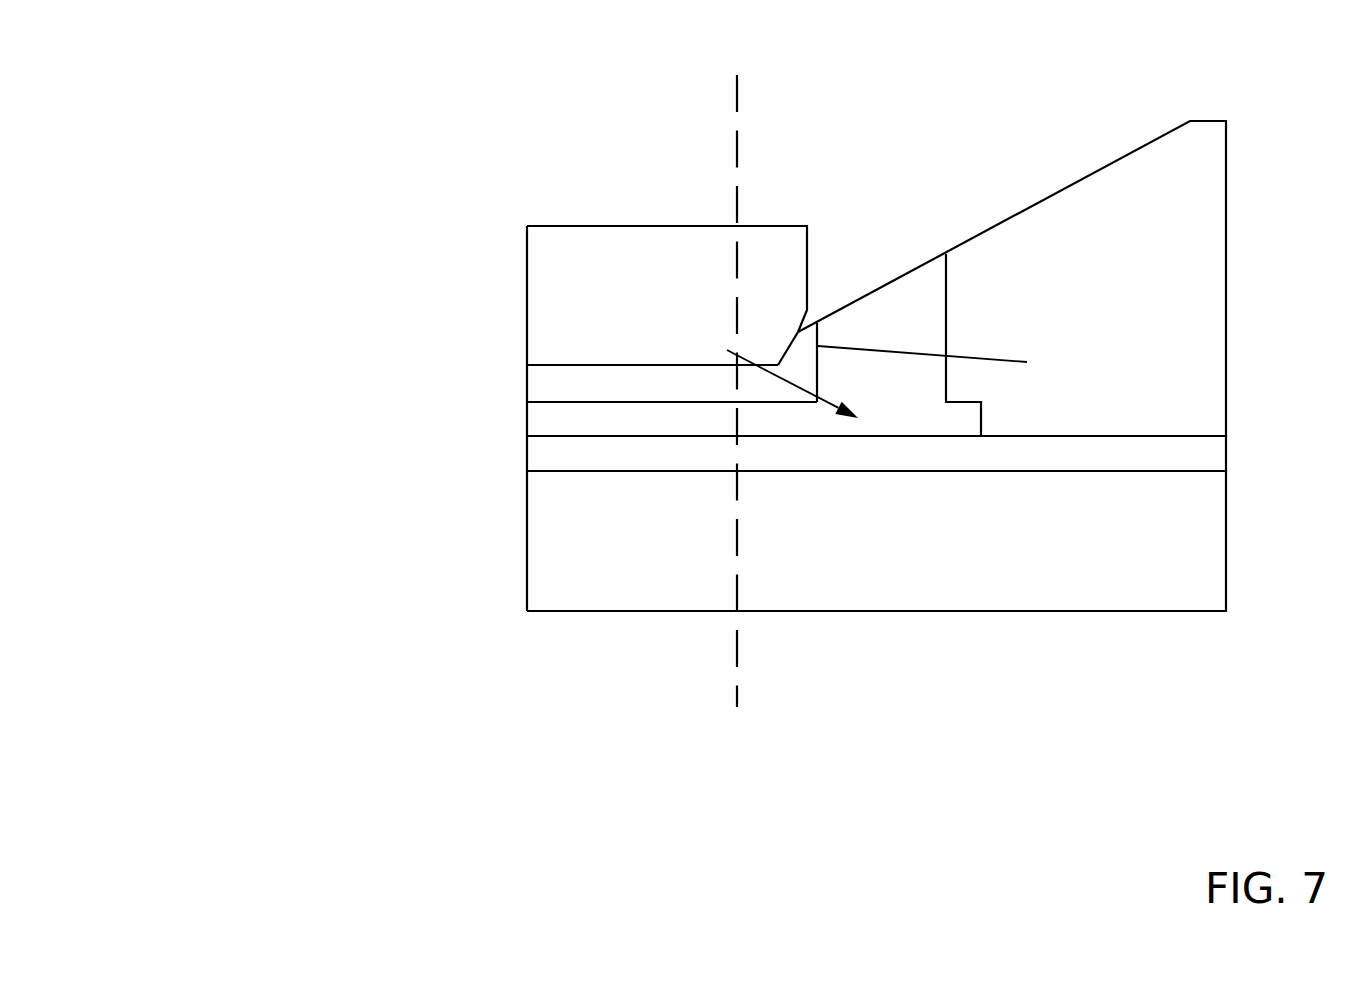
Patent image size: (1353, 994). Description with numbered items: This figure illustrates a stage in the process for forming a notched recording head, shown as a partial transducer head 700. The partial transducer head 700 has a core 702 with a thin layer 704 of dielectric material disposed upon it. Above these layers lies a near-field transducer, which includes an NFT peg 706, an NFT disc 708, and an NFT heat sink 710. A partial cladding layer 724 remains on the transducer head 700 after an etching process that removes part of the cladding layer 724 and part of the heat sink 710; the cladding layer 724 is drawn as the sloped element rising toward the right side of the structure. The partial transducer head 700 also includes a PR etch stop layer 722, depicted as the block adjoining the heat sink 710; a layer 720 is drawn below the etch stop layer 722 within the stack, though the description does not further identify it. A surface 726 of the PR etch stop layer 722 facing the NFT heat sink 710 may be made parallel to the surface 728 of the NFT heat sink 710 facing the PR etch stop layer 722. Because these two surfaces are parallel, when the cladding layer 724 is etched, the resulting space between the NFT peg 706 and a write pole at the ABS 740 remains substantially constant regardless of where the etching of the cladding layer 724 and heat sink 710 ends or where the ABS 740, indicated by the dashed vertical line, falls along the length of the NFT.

The partial transducer head 700 is at (196, 95).
The core 702 is at (527, 554).
The thin layer of dielectric material 704 is at (527, 448).
The NFT peg 706 is at (527, 415).
The NFT disc 708 is at (727, 350).
The NFT heat sink 710 is at (903, 301).
The core layer 720 is at (527, 379).
The PR etch stop layer 722 is at (527, 293).
The partial cladding layer 724 is at (1088, 174).
The surface of the PR etch stop layer 726 is at (789, 344).
The surface of the NFT heat sink 728 is at (1027, 362).
The ABS 740 is at (735, 208).